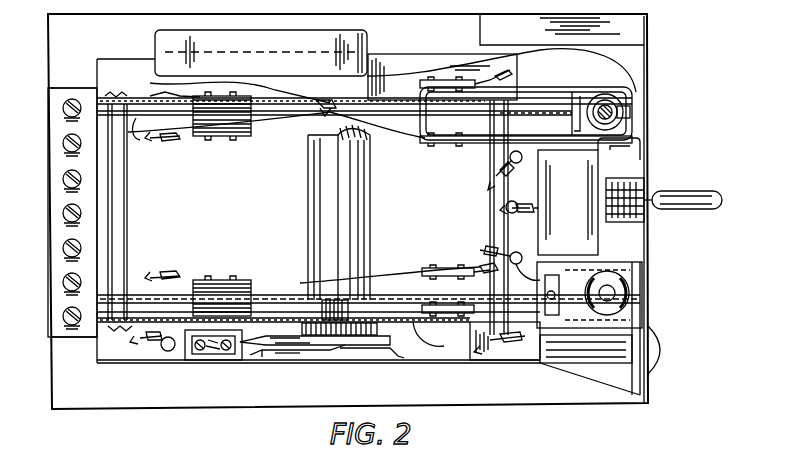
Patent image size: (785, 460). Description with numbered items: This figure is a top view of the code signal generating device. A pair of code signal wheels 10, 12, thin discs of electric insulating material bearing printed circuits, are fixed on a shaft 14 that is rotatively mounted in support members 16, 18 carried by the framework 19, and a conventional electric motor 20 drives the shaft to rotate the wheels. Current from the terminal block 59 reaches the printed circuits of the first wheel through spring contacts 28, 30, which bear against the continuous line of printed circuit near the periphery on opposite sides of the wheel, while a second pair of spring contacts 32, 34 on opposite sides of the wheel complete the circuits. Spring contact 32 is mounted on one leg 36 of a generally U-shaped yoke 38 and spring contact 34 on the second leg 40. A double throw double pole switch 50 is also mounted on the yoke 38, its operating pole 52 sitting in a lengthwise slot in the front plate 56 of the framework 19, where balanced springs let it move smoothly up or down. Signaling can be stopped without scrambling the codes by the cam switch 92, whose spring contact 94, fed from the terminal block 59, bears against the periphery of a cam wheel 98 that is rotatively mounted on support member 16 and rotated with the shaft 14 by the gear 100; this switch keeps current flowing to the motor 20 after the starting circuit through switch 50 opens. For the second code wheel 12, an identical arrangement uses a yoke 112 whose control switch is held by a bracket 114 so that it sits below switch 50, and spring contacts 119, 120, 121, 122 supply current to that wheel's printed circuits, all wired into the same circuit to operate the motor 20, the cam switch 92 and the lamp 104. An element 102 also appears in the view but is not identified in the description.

The code signal wheel 10 is at (278, 272).
The code signal wheel 12 is at (192, 128).
The shaft 14 is at (355, 230).
The support member 16 is at (107, 326).
The support member 18 is at (102, 98).
The framework 19 is at (205, 397).
The electric motor 20 is at (370, 42).
The spring contact 28 is at (296, 296).
The spring contact 30 is at (312, 298).
The spring contact 32 is at (396, 283).
The spring contact 34 is at (440, 332).
The leg 36 is at (478, 250).
The yoke 38 is at (526, 262).
The leg 40 is at (487, 358).
The double throw double pole switch 50 is at (577, 207).
The operating pole 52 is at (718, 186).
The front plate 56 is at (644, 296).
The terminal block 59 is at (62, 302).
The cam switch 92 is at (328, 346).
The spring contact 94 is at (280, 357).
The cam wheel 98 is at (310, 348).
The gear 100 is at (384, 348).
The terminal block 102 is at (252, 360).
The lamp 104 is at (662, 356).
The yoke 112 is at (636, 97).
The bracket 114 is at (598, 148).
The spring contact 119 is at (400, 133).
The spring contact 120 is at (406, 95).
The spring contact 121 is at (284, 127).
The spring contact 122 is at (312, 104).